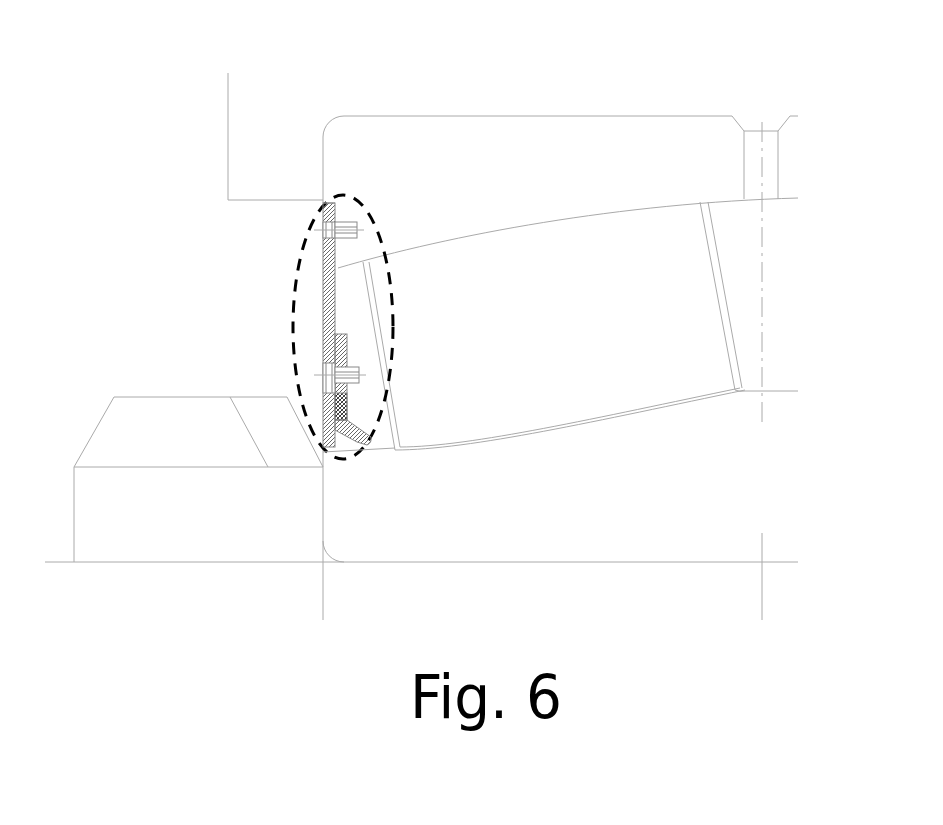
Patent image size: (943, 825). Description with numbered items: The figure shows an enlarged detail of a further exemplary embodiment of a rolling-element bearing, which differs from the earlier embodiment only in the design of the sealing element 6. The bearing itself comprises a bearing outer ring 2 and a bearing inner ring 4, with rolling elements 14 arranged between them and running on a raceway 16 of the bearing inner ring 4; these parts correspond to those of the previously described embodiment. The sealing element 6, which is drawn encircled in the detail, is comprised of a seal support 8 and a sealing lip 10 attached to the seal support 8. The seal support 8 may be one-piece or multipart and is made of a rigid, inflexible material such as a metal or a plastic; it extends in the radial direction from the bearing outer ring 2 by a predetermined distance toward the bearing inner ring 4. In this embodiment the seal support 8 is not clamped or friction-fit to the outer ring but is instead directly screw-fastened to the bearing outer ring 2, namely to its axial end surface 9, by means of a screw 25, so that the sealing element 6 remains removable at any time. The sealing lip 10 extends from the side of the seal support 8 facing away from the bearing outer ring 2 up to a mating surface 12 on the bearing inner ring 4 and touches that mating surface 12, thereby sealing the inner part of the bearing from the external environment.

The bearing outer ring 2 is at (343, 162).
The bearing inner ring 4 is at (487, 545).
The sealing element 6 is at (293, 292).
The seal support 8 is at (327, 300).
The axial end surface 9 is at (326, 203).
The sealing lip 10 is at (335, 405).
The mating surface 12 is at (377, 450).
The rolling elements 14 is at (692, 248).
The raceway 16 is at (580, 430).
The screw 25 is at (360, 207).